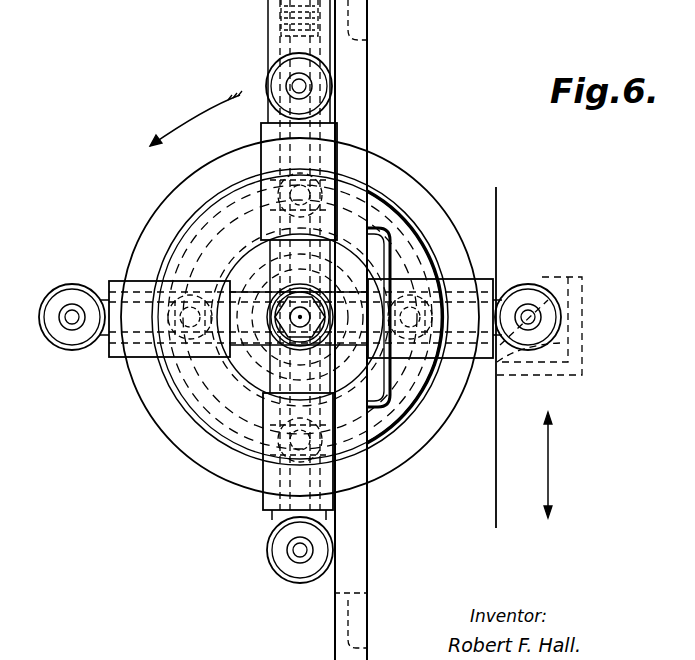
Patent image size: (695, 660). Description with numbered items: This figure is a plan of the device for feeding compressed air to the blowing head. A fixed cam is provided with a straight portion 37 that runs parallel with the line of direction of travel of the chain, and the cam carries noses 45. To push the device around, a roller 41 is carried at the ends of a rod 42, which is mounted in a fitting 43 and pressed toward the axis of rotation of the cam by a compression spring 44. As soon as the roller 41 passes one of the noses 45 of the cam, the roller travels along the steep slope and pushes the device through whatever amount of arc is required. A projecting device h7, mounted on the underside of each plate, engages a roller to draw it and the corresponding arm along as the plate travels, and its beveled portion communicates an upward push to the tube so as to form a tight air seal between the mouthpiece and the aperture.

The straight portion of the cam 37 is at (402, 423).
The roller 41 is at (362, 160).
The rod 42 is at (267, 60).
The fitting 43 is at (317, 42).
The compression spring 44 is at (290, 15).
The nose of the cam 45 is at (215, 262).
The projecting device h7 is at (555, 295).